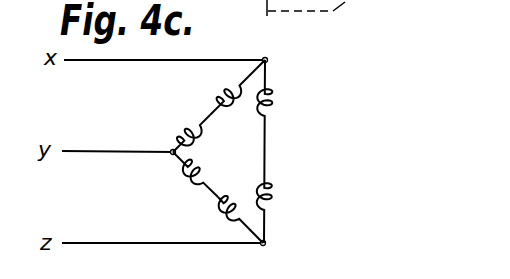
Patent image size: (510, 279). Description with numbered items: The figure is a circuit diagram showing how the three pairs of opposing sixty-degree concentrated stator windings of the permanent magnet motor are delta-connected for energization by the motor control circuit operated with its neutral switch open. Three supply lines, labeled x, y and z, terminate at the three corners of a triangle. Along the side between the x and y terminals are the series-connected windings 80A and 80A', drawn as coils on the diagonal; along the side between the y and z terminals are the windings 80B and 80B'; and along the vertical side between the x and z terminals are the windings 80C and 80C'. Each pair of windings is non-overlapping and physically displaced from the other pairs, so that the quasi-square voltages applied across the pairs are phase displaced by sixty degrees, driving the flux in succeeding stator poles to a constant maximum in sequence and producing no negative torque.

The concentrated stator winding 80A is at (180, 124).
The concentrated stator winding 80A' is at (217, 87).
The concentrated stator winding 80B is at (175, 174).
The concentrated stator winding 80B' is at (211, 219).
The concentrated stator winding 80C is at (296, 196).
The concentrated stator winding 80C' is at (297, 105).